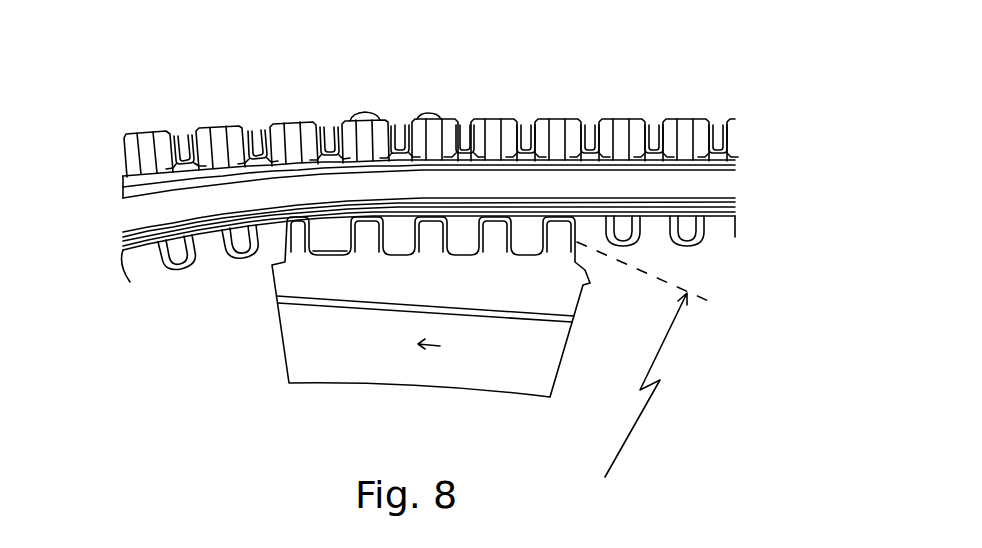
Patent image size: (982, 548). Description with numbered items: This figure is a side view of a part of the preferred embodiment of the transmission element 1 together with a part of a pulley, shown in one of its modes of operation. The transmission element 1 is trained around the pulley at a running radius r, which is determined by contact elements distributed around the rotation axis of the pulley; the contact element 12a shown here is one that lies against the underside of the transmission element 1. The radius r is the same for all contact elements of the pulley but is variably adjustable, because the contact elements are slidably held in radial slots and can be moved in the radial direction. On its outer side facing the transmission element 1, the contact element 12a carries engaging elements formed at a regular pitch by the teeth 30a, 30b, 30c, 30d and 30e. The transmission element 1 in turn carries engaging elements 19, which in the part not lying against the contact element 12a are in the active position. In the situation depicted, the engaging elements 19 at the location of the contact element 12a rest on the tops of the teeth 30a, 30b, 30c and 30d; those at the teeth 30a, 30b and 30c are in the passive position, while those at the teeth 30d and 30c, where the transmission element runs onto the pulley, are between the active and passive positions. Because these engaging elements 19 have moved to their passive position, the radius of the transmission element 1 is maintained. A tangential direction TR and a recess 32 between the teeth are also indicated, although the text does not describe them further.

The transmission element 1 is at (670, 78).
The engaging elements 19 is at (174, 267).
The contact element 12a is at (334, 362).
The recess between teeth 32 is at (333, 247).
The tooth 30a is at (303, 222).
The tooth 30b is at (367, 230).
The tooth 30c is at (427, 233).
The tooth 30d is at (493, 233).
The tooth 30e is at (557, 243).
The running radius r is at (627, 435).
The tangential direction TR is at (439, 357).